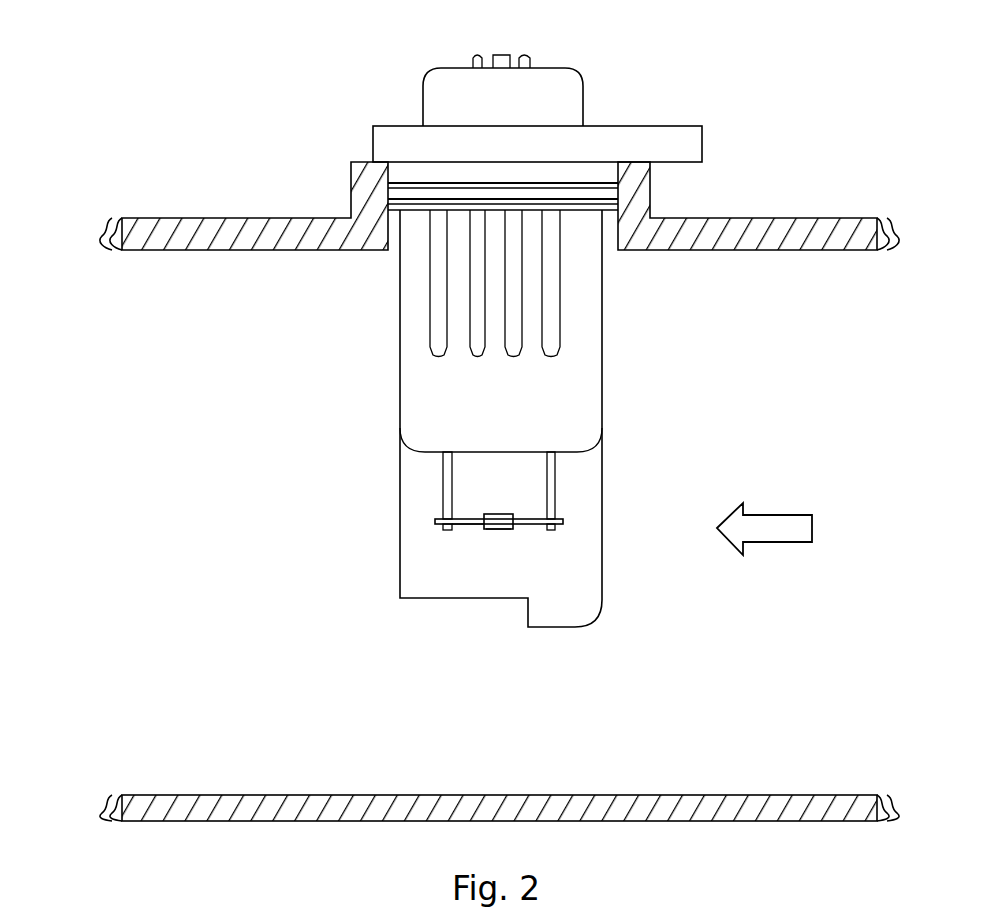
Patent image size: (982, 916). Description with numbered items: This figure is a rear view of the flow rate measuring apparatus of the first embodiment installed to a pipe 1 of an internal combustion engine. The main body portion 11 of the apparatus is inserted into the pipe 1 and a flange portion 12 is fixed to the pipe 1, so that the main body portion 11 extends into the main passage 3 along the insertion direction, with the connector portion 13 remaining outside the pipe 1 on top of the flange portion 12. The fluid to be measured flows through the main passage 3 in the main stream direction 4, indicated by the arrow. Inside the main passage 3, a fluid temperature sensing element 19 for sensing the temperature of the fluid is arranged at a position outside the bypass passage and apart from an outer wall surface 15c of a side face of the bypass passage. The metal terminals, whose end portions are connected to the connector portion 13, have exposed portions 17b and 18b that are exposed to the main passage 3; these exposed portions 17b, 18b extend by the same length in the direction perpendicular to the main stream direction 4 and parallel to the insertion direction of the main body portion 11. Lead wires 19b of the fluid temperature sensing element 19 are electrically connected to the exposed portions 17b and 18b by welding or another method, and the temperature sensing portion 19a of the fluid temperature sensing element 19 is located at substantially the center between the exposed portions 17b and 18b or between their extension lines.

The pipe 1 is at (753, 220).
The main passage 3 is at (175, 323).
The main stream direction 4 is at (782, 515).
The main body portion 11 is at (603, 352).
The flange portion 12 is at (678, 126).
The connector portion 13 is at (423, 98).
The outer wall surface 15c is at (435, 520).
The exposed portion 17b is at (447, 498).
The exposed portion 18b is at (555, 498).
The fluid temperature sensing element 19 is at (513, 528).
The temperature sensing portion 19a is at (502, 530).
The lead wires 19b is at (468, 527).